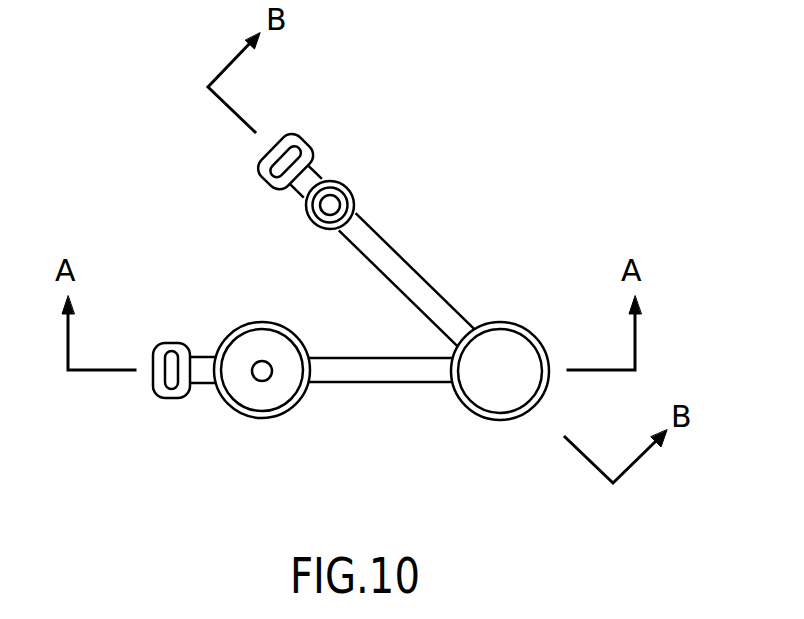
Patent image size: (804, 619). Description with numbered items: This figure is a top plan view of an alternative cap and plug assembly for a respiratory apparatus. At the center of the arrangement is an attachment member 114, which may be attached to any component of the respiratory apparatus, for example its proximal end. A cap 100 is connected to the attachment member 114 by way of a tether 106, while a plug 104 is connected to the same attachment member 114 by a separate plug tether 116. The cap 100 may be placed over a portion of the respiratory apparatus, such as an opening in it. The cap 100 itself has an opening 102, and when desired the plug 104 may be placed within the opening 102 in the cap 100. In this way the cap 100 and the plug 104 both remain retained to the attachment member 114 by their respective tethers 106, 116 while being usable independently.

The cap 100 is at (247, 415).
The opening 102 is at (262, 364).
The plug 104 is at (342, 200).
The tether 106 is at (368, 372).
The attachment member 114 is at (527, 333).
The plug tether 116 is at (408, 277).